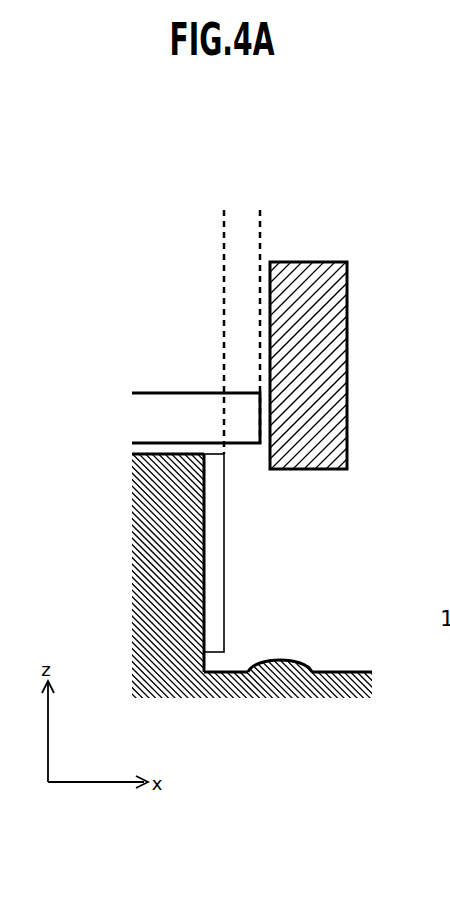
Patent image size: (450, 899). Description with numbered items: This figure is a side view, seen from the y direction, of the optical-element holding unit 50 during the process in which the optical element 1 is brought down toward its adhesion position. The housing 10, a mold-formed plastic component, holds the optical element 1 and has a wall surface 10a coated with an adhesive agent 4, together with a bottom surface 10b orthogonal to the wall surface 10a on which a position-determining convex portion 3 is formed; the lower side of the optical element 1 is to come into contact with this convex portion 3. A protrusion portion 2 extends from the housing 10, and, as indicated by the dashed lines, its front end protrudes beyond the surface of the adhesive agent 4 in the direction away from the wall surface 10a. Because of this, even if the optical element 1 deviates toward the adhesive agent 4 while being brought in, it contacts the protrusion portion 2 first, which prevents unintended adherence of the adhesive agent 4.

The optical element 1 is at (349, 398).
The protrusion portion 2 is at (158, 405).
The position-determining convex portion 3 is at (297, 662).
The adhesive agent 4 is at (213, 520).
The housing 10 is at (154, 560).
The wall surface 10a is at (200, 588).
The bottom surface 10b is at (330, 673).
The optical-element holding unit 50 is at (380, 295).